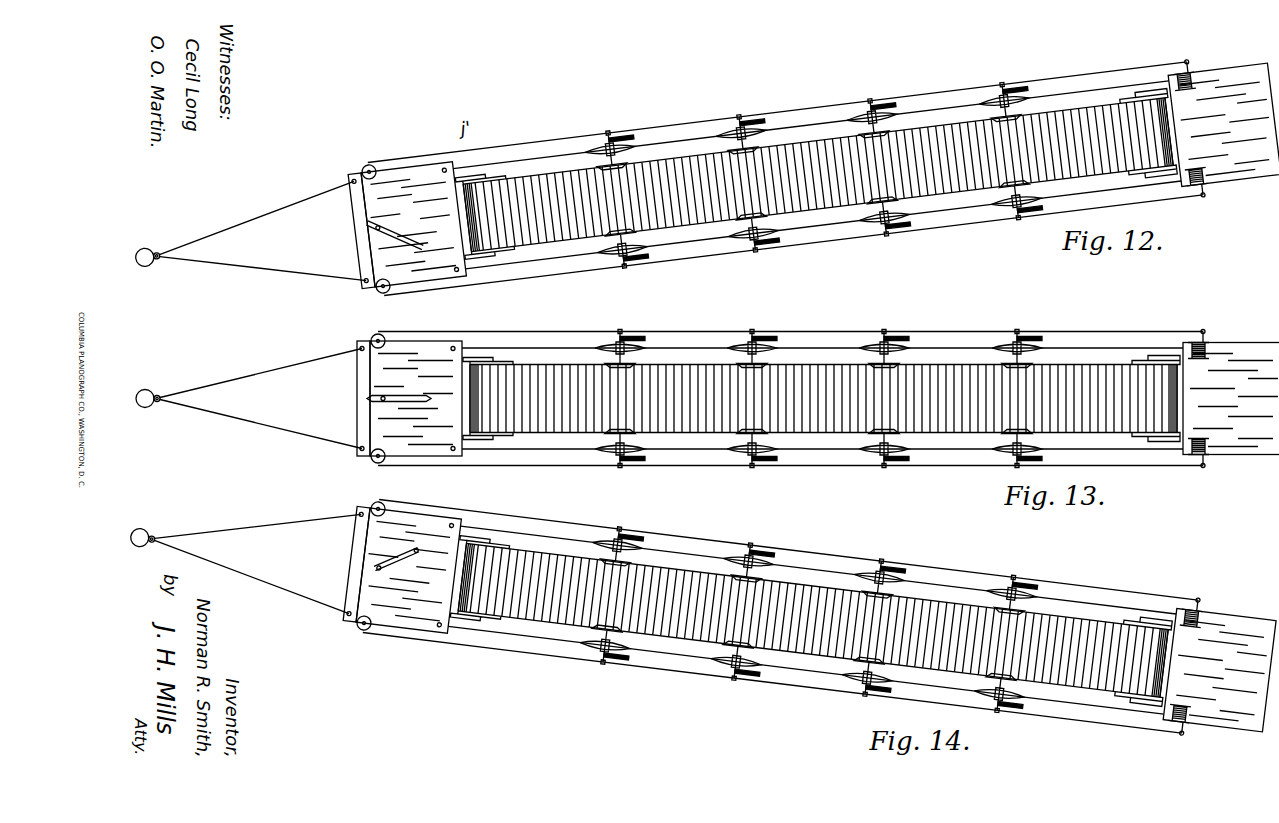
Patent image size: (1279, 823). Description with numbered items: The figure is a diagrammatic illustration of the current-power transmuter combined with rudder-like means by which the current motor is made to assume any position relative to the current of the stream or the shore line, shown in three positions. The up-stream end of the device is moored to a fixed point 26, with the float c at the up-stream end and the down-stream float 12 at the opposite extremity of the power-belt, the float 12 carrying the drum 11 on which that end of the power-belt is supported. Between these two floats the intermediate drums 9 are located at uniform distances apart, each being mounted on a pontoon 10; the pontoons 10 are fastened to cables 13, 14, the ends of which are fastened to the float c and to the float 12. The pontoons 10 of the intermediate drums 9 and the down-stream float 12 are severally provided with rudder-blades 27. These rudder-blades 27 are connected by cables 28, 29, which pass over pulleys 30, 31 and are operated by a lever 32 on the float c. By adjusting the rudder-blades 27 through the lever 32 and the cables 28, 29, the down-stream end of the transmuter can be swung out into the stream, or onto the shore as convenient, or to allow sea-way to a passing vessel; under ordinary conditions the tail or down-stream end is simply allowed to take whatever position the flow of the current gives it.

In FIG. 12, the intermediate drums 9 is at (685, 125).
In FIG. 13, the intermediate drums 9 is at (781, 333).
In FIG. 14, the intermediate drums 9 is at (644, 535).
In FIG. 12, the pontoons 10 is at (700, 119).
In FIG. 13, the pontoons 10 is at (729, 459).
In FIG. 14, the pontoons 10 is at (801, 547).
In FIG. 12, the guide roller 11 is at (1164, 113).
In FIG. 12, the down-stream float 12 is at (1223, 124).
In FIG. 13, the down-stream float 12 is at (1231, 399).
In FIG. 14, the down-stream float 12 is at (1219, 670).
In FIG. 12, the cable 13 is at (826, 245).
In FIG. 12, the cable 14 is at (808, 99).
In FIG. 12, the fixed point 26 is at (248, 244).
In FIG. 13, the fixed point 26 is at (250, 399).
In FIG. 14, the fixed point 26 is at (243, 550).
In FIG. 12, the rudder-blades 27 is at (900, 160).
In FIG. 13, the rudder-blades 27 is at (818, 397).
In FIG. 14, the rudder-blades 27 is at (808, 618).
In FIG. 12, the cable 28 is at (777, 104).
In FIG. 13, the cable 28 is at (791, 313).
In FIG. 14, the cable 28 is at (792, 532).
In FIG. 12, the cable 29 is at (796, 261).
In FIG. 13, the cable 29 is at (791, 480).
In FIG. 14, the cable 29 is at (771, 701).
In FIG. 12, the pulley 30 is at (374, 157).
In FIG. 13, the pulley 30 is at (389, 329).
In FIG. 14, the pulley 30 is at (391, 499).
In FIG. 12, the pulley 31 is at (363, 297).
In FIG. 13, the pulley 31 is at (362, 467).
In FIG. 14, the pulley 31 is at (360, 643).
In FIG. 12, the lever 32 is at (413, 235).
In FIG. 13, the lever 32 is at (418, 356).
In FIG. 14, the lever 32 is at (420, 529).
In FIG. 12, the float c is at (407, 225).
In FIG. 13, the float c is at (409, 398).
In FIG. 14, the float c is at (402, 569).